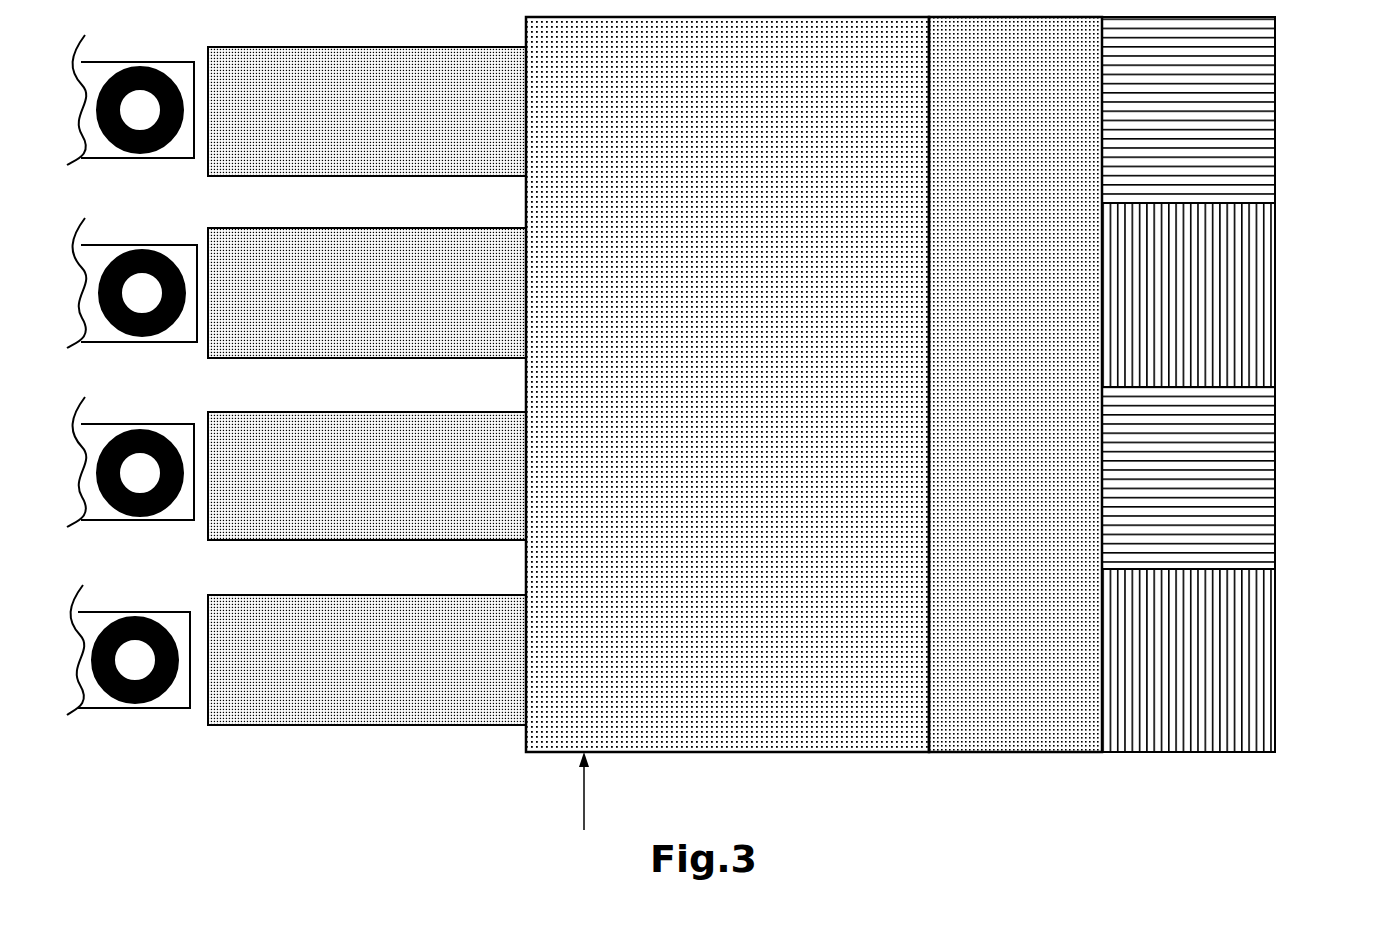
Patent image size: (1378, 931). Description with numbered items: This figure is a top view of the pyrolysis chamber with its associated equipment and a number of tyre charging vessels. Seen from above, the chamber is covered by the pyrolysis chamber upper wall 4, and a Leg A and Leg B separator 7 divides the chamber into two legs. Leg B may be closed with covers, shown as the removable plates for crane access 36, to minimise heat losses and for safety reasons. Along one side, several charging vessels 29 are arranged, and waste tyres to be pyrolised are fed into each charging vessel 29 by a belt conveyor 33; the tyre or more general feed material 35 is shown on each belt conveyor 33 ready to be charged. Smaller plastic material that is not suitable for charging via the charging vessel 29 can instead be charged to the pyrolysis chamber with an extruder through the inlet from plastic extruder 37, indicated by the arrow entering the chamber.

The pyrolysis chamber upper wall 4 is at (872, 716).
The Leg A and Leg B separator 7 is at (1045, 716).
The removable plates for crane access 36 is at (1250, 96).
The charging vessel 29 is at (383, 705).
The belt conveyor 33 is at (181, 690).
The tyre or feed material 35 is at (128, 665).
The inlet from plastic extruder 37 is at (584, 780).